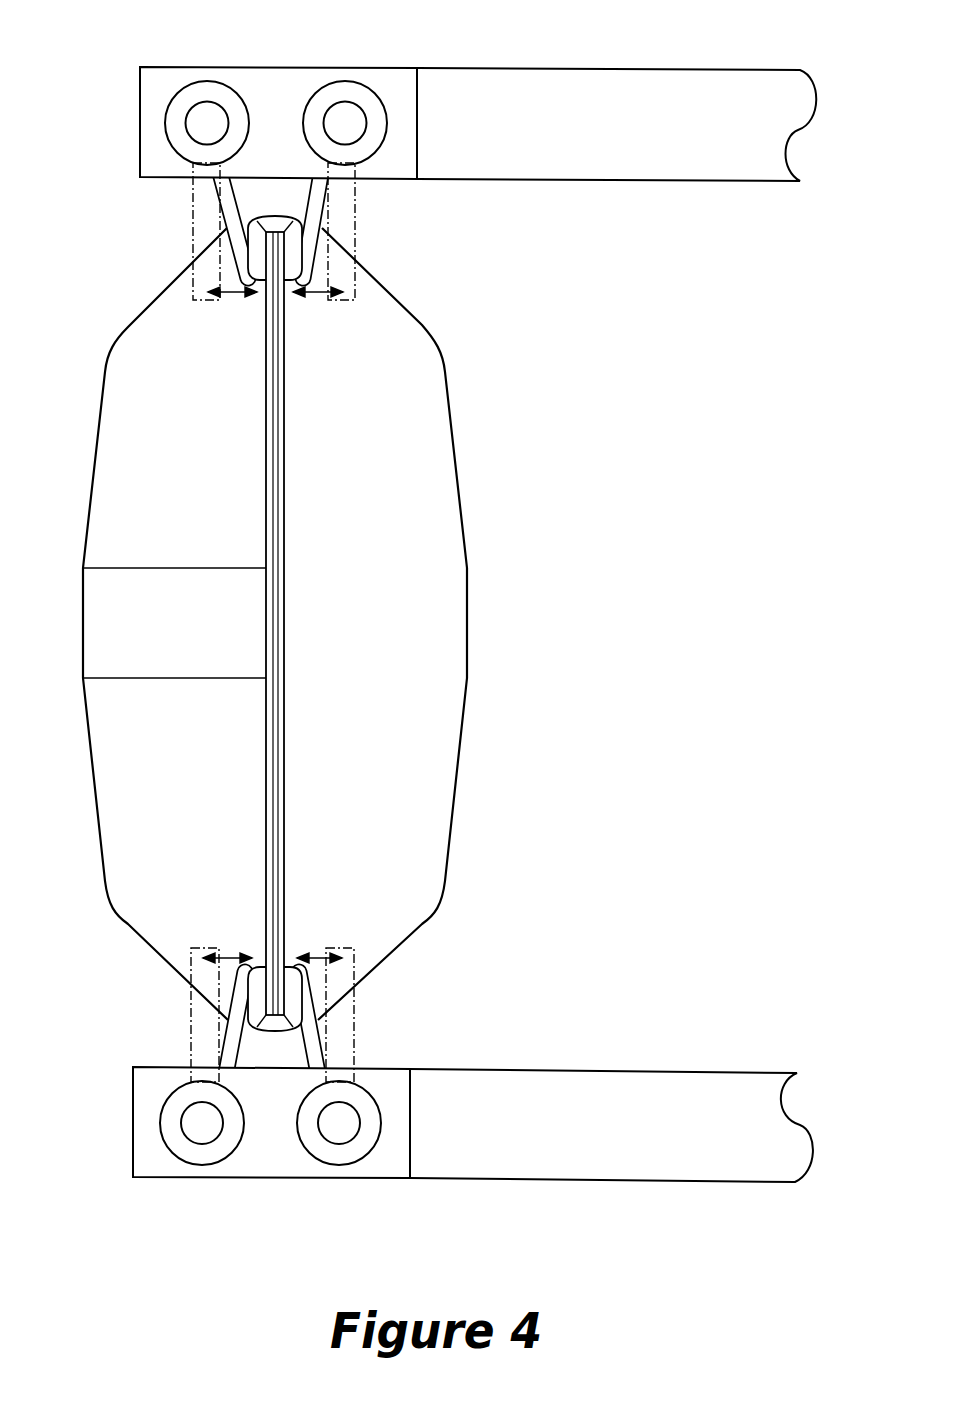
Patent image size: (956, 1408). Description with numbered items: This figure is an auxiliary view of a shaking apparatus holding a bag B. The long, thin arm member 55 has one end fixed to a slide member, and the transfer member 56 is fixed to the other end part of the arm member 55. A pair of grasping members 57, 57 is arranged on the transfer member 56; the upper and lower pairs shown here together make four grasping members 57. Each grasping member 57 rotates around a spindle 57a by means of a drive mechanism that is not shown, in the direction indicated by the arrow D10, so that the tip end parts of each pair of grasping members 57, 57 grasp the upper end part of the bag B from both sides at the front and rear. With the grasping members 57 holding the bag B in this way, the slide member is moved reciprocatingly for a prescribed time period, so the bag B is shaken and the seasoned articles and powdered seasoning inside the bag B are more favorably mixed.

The bag B is at (455, 407).
The arm member 55 is at (608, 85).
The transfer member 56 is at (148, 117).
The grasping member 57 is at (208, 88).
The spindle 57a is at (208, 123).
The arrow D10 is at (273, 622).